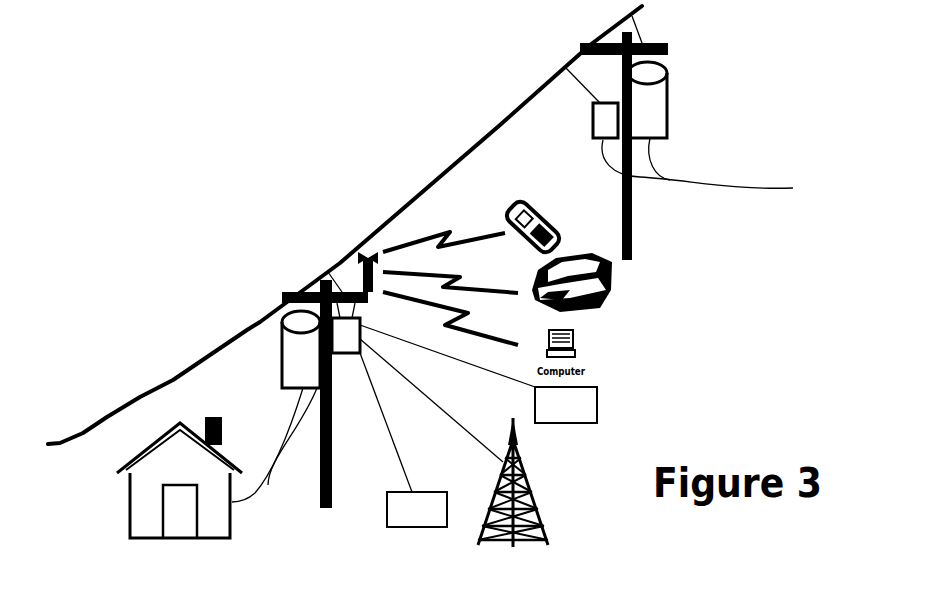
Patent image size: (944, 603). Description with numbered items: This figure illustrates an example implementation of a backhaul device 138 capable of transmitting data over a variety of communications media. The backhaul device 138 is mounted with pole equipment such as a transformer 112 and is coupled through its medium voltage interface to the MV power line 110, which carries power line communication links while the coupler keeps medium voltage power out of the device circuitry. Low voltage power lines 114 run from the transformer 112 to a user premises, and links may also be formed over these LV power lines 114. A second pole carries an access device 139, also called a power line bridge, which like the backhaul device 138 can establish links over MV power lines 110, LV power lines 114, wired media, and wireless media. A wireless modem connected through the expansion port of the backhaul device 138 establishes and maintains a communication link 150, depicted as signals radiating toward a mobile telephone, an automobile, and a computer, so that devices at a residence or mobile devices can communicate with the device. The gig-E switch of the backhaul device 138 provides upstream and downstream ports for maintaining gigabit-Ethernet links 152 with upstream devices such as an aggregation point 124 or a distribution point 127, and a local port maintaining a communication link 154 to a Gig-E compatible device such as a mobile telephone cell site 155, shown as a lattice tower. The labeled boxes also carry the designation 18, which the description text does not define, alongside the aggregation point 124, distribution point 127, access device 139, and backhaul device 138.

The MV power line 110 is at (455, 163).
The transformer 112 is at (667, 100).
The LV power line 114 is at (698, 185).
The access device 139 is at (593, 115).
The communication link 150 is at (465, 238).
The backhaul device 138 is at (349, 355).
The gigabit-Ethernet link 152 is at (477, 366).
The communication link 154 is at (448, 415).
The mobile telephone cell site 155 is at (525, 483).
The aggregation point 124 is at (696, 398).
The distribution point 127 is at (596, 405).
The device 18 is at (440, 527).